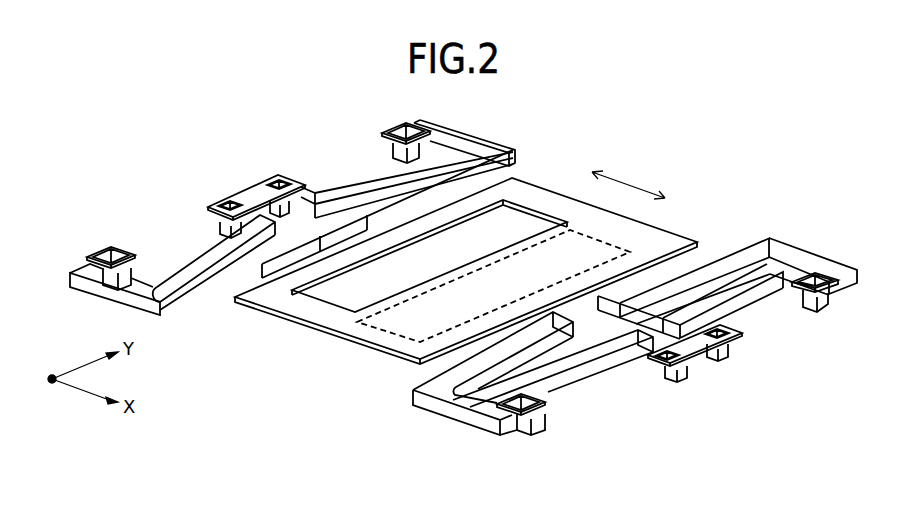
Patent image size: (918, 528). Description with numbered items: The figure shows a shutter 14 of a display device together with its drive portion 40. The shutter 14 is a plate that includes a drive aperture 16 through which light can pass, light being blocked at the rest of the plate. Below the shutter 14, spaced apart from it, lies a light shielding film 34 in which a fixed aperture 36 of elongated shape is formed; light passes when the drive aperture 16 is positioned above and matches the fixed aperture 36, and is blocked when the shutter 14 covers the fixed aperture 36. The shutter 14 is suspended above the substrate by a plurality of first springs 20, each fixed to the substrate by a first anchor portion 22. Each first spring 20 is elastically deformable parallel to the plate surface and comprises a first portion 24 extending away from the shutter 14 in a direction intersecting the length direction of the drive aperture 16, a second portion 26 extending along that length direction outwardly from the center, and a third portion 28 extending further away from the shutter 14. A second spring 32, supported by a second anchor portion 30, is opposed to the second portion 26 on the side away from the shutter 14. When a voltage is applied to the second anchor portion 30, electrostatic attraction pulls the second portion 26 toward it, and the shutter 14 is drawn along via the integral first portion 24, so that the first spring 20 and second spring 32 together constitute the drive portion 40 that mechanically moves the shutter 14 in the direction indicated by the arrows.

The shutter 14 is at (346, 337).
The drive aperture 16 is at (340, 292).
The first spring 20 is at (856, 183).
The first anchor portion 22 is at (812, 300).
The first portion 24 is at (700, 282).
The second portion 26 is at (745, 255).
The third portion 28 is at (812, 262).
The second anchor portion 30 is at (667, 373).
The second spring 32 is at (613, 357).
The light shielding film 34 is at (215, 468).
The fixed aperture 36 is at (393, 320).
The drive portion 40 is at (573, 397).